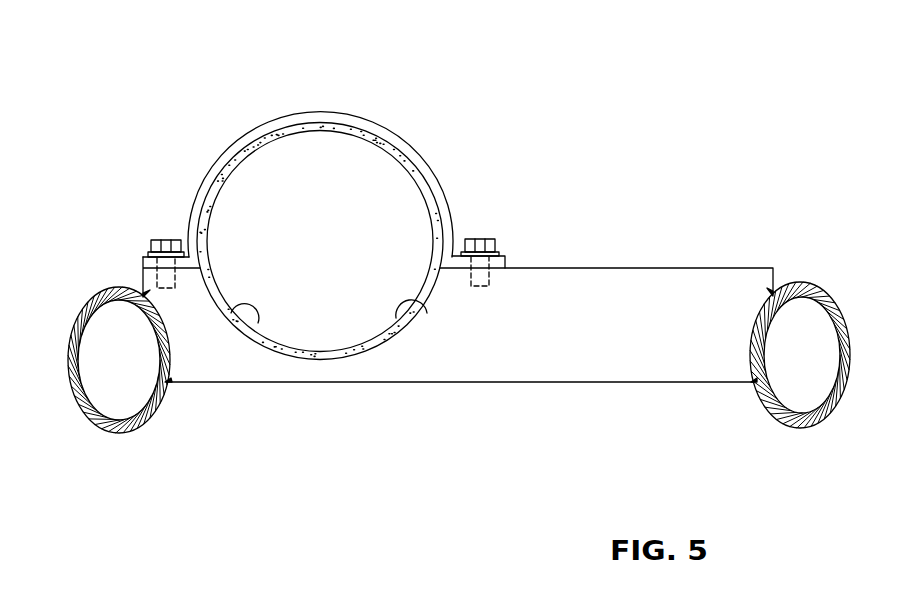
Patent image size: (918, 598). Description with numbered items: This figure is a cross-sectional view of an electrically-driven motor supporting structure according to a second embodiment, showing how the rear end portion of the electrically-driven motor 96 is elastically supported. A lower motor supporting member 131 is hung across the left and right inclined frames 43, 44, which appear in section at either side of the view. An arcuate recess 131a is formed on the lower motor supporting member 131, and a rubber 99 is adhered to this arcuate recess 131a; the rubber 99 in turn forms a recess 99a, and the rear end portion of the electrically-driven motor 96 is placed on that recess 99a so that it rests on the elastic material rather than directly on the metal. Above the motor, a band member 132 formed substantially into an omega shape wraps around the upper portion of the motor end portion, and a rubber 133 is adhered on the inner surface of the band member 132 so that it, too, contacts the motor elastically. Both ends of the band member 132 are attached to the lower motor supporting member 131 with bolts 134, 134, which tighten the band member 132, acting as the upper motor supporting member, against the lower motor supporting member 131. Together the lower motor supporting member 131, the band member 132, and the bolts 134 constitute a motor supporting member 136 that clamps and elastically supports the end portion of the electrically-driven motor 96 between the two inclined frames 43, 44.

The left inclined frame 43 is at (91, 302).
The right inclined frame 44 is at (821, 288).
The electrically-driven motor 96 is at (270, 170).
The rubber 99 is at (352, 358).
The recess 99a is at (254, 322).
The lower motor supporting member 131 is at (631, 356).
The arcuate recess 131a is at (400, 320).
The band member 132 is at (360, 120).
The rubber 133 is at (400, 150).
The bolts 134 is at (165, 240).
The motor supporting member 136 is at (364, 148).